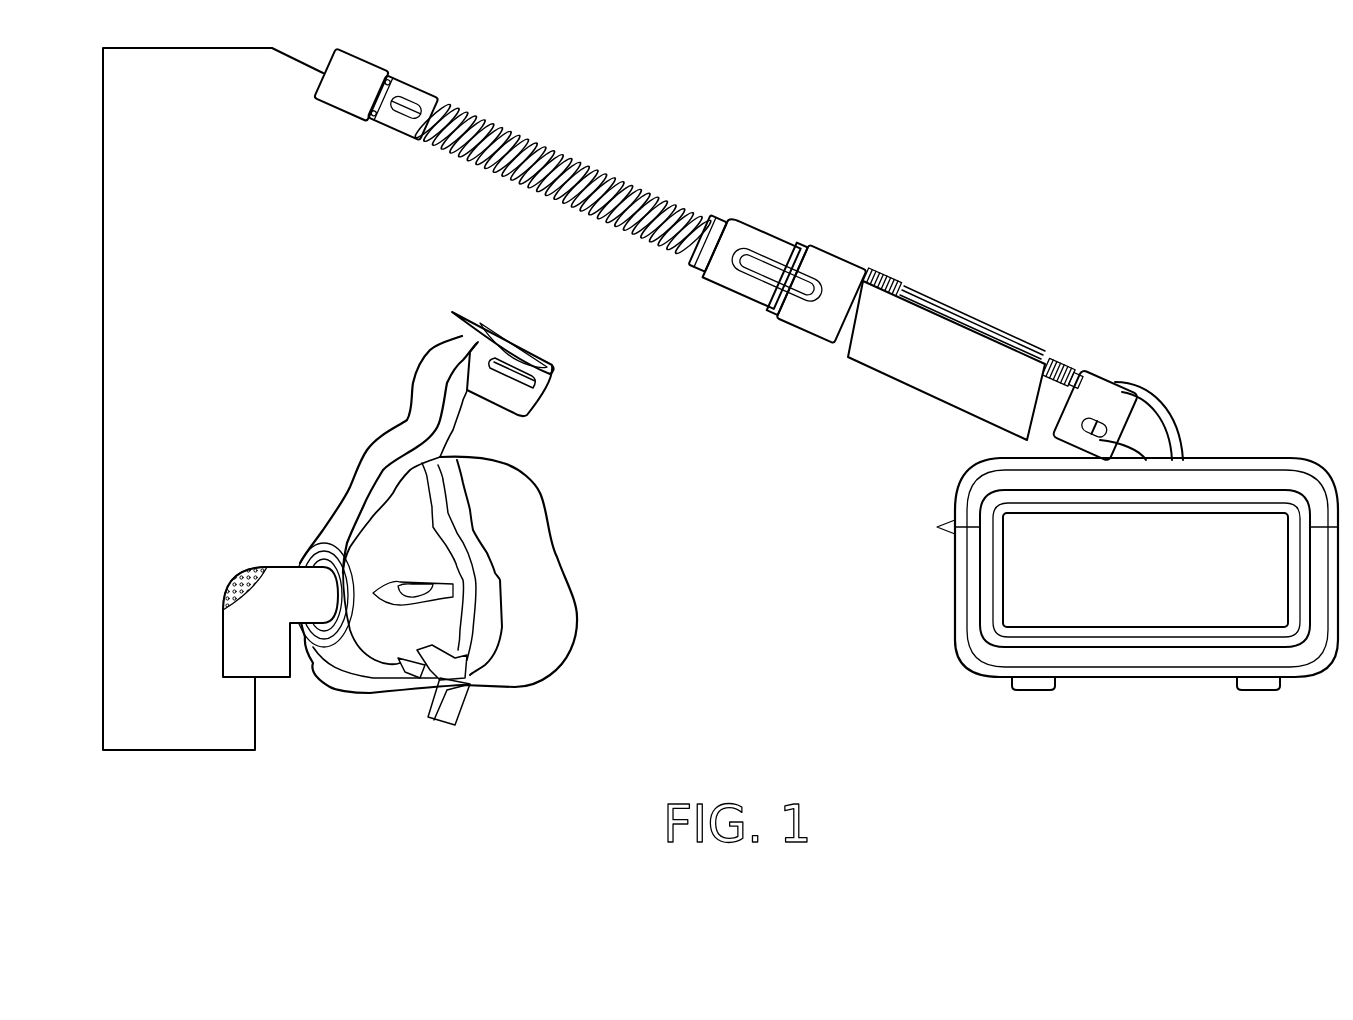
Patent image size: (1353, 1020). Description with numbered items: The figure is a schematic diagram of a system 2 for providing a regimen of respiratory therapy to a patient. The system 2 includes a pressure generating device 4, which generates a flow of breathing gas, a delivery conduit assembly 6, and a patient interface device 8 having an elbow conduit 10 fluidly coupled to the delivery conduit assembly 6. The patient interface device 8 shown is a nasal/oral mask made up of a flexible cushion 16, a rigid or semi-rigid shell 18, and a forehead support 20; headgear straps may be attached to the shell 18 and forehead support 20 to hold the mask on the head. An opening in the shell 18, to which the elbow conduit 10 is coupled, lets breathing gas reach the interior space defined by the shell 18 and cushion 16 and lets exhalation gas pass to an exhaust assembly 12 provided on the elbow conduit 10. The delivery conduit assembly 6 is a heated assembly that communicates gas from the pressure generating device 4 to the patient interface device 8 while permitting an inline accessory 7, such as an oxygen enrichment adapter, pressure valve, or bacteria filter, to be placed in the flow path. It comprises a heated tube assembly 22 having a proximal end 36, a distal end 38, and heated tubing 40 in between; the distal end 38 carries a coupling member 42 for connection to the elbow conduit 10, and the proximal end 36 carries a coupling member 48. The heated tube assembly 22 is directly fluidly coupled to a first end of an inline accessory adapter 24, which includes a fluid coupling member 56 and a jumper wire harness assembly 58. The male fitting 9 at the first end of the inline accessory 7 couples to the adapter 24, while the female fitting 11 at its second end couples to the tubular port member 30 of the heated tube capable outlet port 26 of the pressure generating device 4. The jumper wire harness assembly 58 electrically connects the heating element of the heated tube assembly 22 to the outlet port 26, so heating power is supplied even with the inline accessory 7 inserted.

The system 2 is at (1012, 135).
The pressure generating device 4 is at (1262, 457).
The delivery conduit assembly 6 is at (800, 274).
The inline accessory 7 is at (892, 378).
The patient interface device 8 is at (421, 518).
The male fitting 9 is at (880, 296).
The elbow conduit 10 is at (248, 610).
The female fitting 11 is at (1058, 366).
The exhaust assembly 12 is at (243, 573).
The flexible cushion 16 is at (522, 497).
The shell 18 is at (398, 537).
The forehead support 20 is at (426, 362).
The heated tube assembly 22 is at (534, 140).
The inline accessory adapter 24 is at (799, 336).
The heated tube capable outlet port 26 is at (1157, 393).
The tubular port member 30 is at (1052, 440).
The proximal end 36 is at (692, 276).
The distal end 38 is at (396, 140).
The heated tubing 40 is at (601, 170).
The coupling member 42 is at (330, 112).
The coupling member 48 is at (741, 313).
The fluid coupling member 56 is at (855, 257).
The jumper wire harness assembly 58 is at (995, 332).